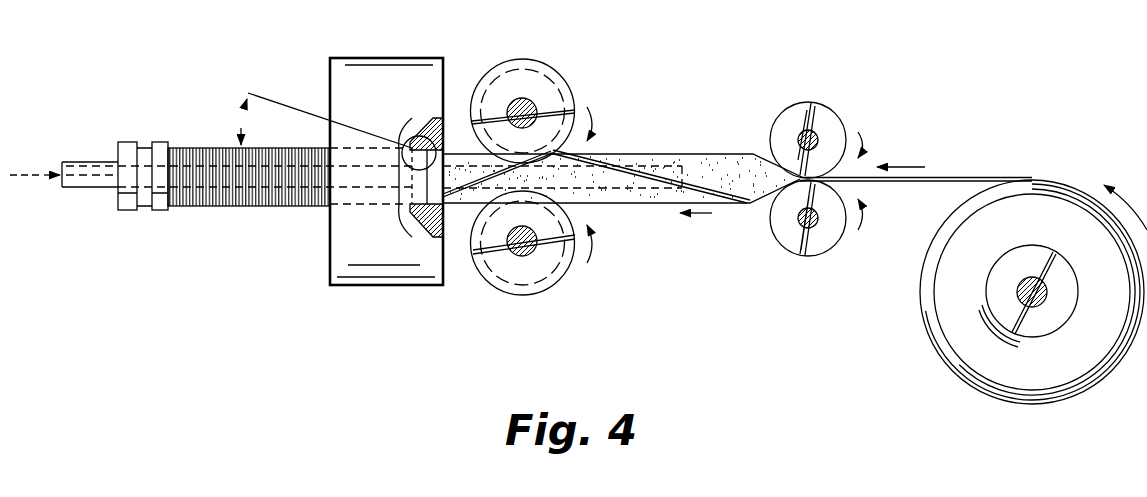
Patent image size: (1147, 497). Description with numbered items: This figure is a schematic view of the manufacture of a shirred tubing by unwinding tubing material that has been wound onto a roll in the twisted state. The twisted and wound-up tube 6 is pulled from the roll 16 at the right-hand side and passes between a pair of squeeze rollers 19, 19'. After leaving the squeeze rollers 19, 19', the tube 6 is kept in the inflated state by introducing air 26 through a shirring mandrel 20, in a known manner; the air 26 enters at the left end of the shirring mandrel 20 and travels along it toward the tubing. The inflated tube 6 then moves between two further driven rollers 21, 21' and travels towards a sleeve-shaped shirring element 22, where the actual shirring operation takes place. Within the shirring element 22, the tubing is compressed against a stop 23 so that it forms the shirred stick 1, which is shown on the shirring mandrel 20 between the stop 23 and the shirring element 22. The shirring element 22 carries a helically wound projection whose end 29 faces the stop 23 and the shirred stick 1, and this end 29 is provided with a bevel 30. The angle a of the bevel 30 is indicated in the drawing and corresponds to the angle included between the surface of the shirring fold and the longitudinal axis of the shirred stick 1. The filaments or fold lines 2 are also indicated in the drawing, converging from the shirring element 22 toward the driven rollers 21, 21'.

The shirred stick 1 is at (223, 210).
The filaments / threads 2 is at (217, 152).
The tube 6 is at (670, 153).
The roll 16 is at (916, 313).
The squeeze roller 19 is at (808, 130).
The squeeze roller 19' is at (800, 230).
The shirring mandrel 20 is at (93, 177).
The driven roller 21 is at (532, 90).
The driven roller 21' is at (522, 261).
The sleeve-shaped shirring element 22 is at (397, 273).
The stop 23 is at (162, 147).
The air 26 is at (35, 161).
The end of the helically wound projection 29 is at (432, 228).
The bevel 30 is at (402, 150).
The angle a is at (326, 120).